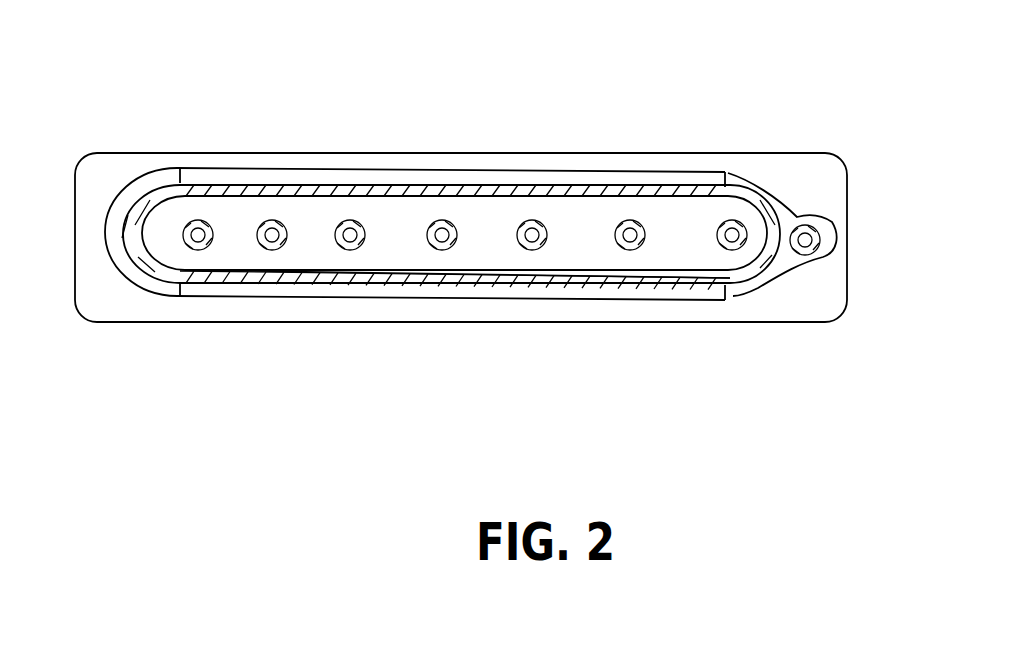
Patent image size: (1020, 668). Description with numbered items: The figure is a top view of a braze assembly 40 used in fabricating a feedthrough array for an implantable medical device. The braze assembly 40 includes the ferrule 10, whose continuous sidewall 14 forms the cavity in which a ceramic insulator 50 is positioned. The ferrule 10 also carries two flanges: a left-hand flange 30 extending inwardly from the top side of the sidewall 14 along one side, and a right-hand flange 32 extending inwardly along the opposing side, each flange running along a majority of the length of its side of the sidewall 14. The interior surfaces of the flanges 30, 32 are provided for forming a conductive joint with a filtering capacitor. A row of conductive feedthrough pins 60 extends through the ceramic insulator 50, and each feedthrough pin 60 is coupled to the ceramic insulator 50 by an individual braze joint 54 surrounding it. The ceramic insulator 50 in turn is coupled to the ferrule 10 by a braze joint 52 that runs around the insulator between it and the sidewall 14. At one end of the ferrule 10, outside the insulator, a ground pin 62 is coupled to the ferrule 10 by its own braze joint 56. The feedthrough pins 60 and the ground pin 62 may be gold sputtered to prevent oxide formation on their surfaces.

The braze assembly 40 is at (505, 33).
The ferrule 10 is at (808, 172).
The sidewall 14 is at (120, 207).
The left-hand flange 30 is at (438, 178).
The right-hand flange 32 is at (432, 290).
The ceramic insulator 50 is at (498, 217).
The braze joint 52 is at (343, 282).
The braze joints 54 is at (274, 251).
The conductive feedthrough pins 60 is at (272, 221).
The ground pin 62 is at (820, 233).
The braze joint 56 is at (813, 253).